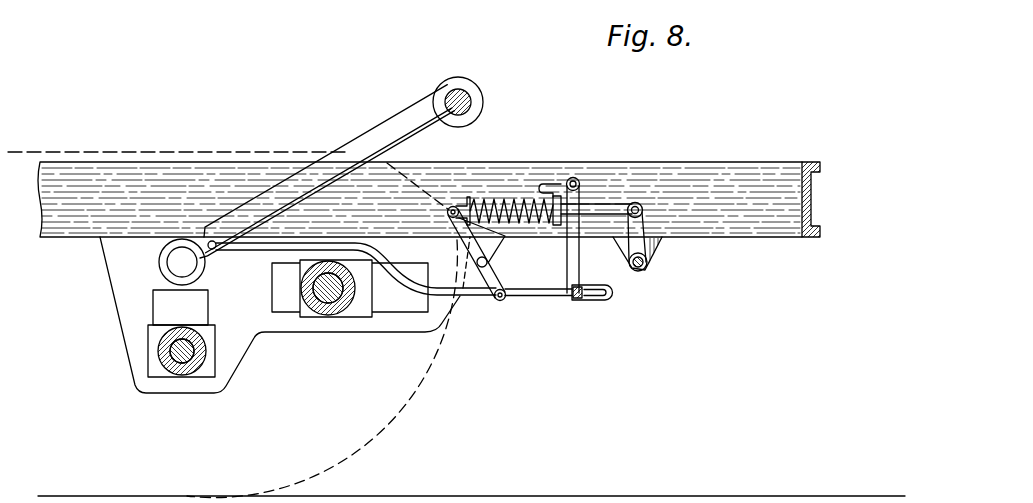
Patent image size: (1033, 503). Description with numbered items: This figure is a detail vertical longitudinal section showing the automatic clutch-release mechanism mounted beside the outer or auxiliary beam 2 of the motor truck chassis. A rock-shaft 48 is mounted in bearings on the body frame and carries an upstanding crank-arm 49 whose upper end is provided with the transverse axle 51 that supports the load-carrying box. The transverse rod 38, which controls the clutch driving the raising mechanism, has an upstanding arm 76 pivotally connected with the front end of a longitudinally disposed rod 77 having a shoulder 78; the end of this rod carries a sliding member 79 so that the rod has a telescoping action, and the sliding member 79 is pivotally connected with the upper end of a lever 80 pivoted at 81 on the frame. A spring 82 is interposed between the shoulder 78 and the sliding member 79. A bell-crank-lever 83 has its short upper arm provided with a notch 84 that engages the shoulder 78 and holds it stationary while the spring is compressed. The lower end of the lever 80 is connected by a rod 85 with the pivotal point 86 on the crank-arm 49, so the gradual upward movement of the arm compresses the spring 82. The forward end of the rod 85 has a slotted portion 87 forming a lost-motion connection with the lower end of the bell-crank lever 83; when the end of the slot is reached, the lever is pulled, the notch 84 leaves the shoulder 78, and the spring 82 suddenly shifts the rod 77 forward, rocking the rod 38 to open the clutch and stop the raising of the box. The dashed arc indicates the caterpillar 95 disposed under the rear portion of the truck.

The outer or auxiliary beam 2 is at (701, 166).
The transverse rod 38 is at (647, 266).
The rock-shaft 48 is at (168, 260).
The crank-arm 49 is at (381, 133).
The axle 51 is at (483, 98).
The upstanding arm 76 is at (640, 240).
The longitudinally disposed rod 77 is at (601, 207).
The shoulder 78 is at (556, 222).
The sliding member 79 is at (468, 203).
The lever 80 is at (456, 245).
The pivot 81 is at (488, 262).
The spring 82 is at (512, 197).
The bell-crank-lever 83 is at (579, 257).
The notch 84 is at (554, 183).
The rod 85 is at (470, 294).
The pivotal point 86 is at (210, 240).
The slotted portion 87 is at (591, 297).
The caterpillar 95 is at (402, 406).